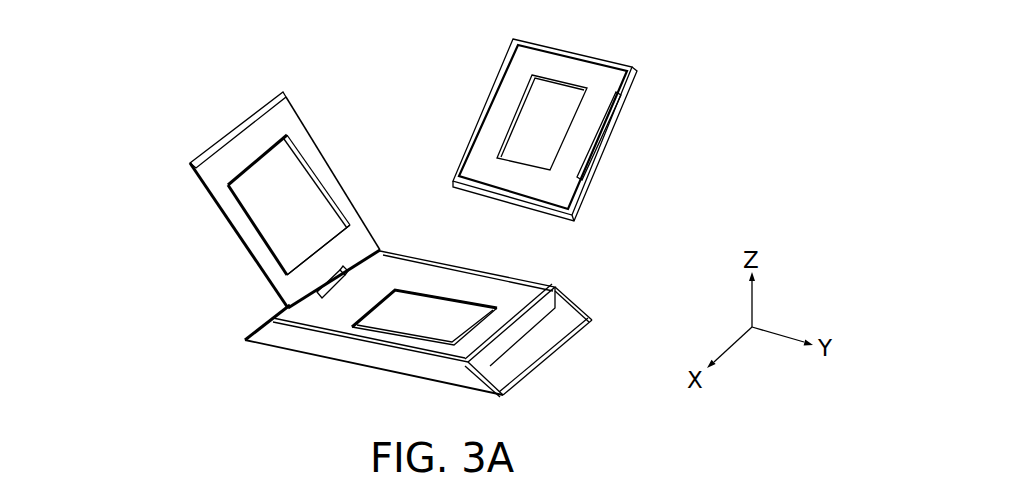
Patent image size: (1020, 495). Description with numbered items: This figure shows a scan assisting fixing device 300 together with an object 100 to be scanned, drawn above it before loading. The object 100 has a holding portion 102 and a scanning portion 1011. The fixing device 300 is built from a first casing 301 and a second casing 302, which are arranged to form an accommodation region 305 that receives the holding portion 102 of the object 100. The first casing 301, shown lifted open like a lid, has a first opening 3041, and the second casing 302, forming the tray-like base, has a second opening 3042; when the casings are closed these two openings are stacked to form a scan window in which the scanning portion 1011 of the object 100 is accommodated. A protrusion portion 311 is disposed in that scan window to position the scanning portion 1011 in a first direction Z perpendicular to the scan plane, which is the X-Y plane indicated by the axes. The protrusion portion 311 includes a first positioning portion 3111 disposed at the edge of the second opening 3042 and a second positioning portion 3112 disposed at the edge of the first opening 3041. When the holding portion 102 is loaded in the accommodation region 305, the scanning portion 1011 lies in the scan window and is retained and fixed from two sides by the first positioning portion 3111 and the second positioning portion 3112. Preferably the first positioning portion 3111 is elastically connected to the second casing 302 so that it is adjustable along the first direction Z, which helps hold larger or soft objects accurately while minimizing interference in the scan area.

The fixing device 300 is at (217, 115).
The first casing 301 is at (242, 238).
The second casing 302 is at (258, 328).
The accommodation region 305 is at (407, 268).
The protrusion portion 311 is at (386, 285).
The first positioning portion 3111 is at (493, 320).
The second positioning portion 3112 is at (228, 180).
The first opening 3041 is at (290, 190).
The second opening 3042 is at (430, 316).
The object 100 is at (476, 95).
The holding portion 102 is at (634, 68).
The scanning portion 1011 is at (550, 138).